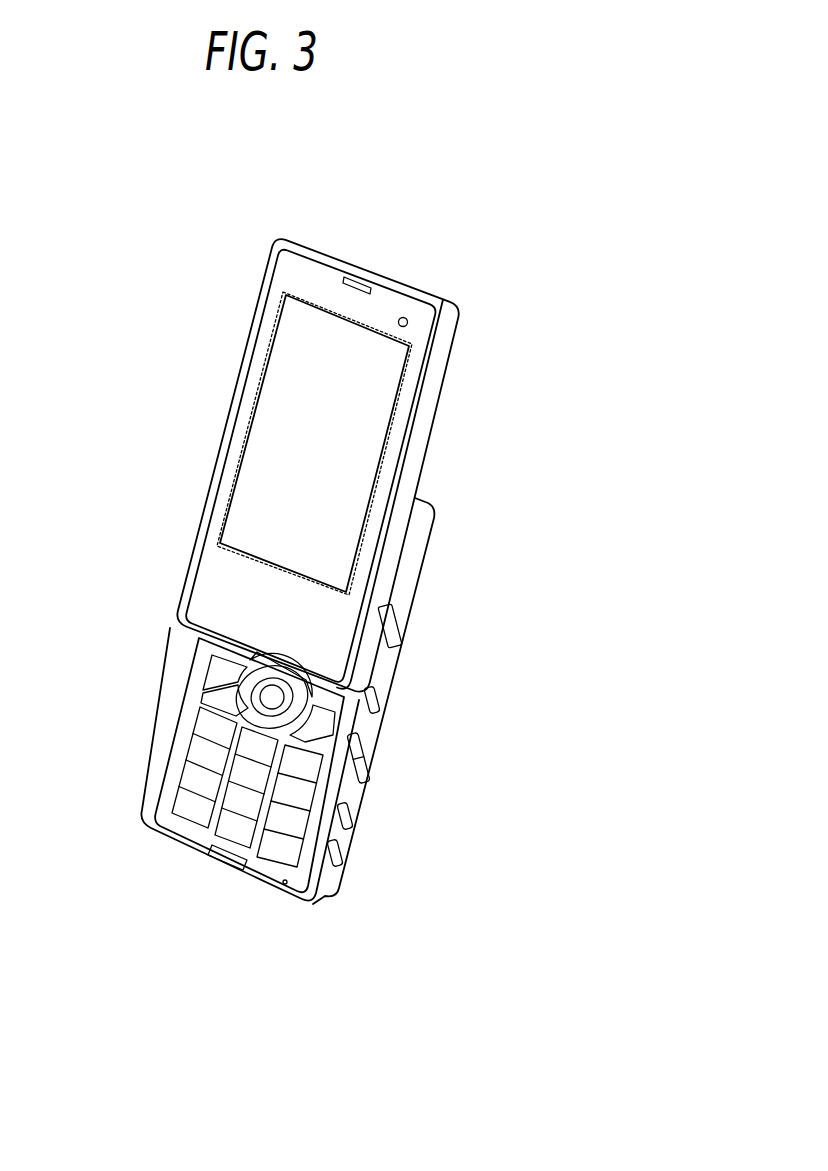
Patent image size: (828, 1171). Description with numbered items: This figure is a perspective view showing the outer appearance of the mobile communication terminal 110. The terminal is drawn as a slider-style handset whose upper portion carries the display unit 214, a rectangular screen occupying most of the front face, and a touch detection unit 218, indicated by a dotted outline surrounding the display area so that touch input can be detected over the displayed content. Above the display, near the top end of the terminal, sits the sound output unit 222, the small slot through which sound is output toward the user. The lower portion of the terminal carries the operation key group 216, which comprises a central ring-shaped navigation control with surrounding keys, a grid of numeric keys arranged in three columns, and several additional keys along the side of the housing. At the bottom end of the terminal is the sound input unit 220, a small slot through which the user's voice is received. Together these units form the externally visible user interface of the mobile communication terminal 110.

The mobile communication terminal 110 is at (362, 220).
The display unit 214 is at (290, 497).
The operation key group 216 is at (153, 618).
The touch detection unit 218 is at (250, 424).
The sound input unit 220 is at (276, 883).
The sound output unit 222 is at (346, 286).